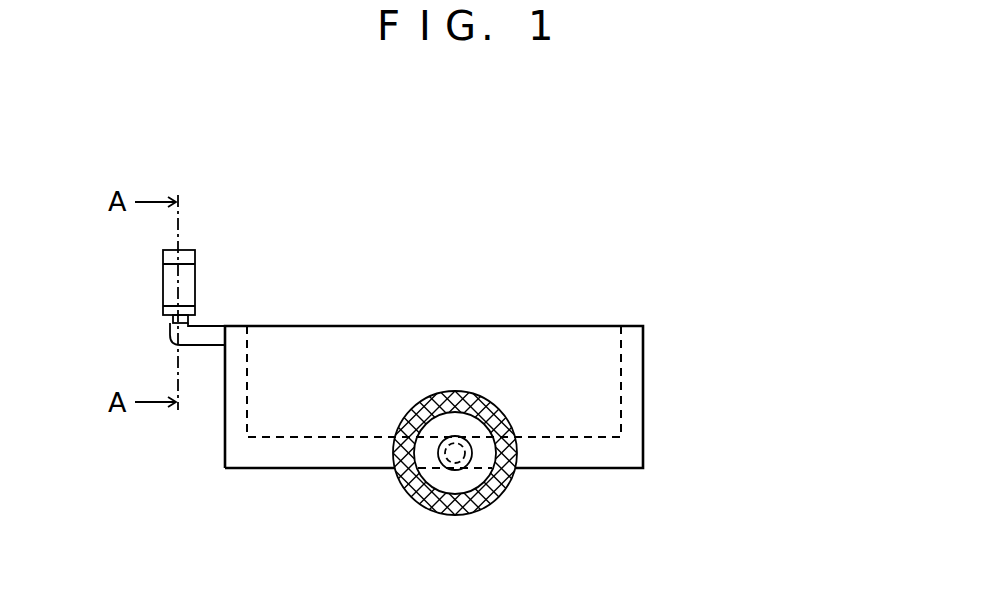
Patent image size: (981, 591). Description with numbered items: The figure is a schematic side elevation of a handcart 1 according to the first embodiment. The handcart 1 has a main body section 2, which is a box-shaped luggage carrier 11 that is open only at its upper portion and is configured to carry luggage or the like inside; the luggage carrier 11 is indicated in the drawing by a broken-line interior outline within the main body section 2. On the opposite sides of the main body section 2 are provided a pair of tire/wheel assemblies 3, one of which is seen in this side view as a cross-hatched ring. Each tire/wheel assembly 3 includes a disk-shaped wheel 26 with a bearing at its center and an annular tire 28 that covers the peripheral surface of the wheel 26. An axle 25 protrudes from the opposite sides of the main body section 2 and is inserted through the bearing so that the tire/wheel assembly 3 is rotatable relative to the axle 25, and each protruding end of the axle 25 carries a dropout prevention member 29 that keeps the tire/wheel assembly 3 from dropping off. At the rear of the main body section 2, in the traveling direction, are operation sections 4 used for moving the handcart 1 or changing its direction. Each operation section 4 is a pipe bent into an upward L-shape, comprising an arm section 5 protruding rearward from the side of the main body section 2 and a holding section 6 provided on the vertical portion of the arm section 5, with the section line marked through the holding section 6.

The handcart 1 is at (503, 199).
The main body section 2 is at (693, 314).
The tire/wheel assembly 3 is at (413, 531).
The operation section 4 is at (220, 267).
The arm section 5 is at (202, 335).
The holding section 6 is at (146, 293).
The luggage carrier 11 is at (567, 336).
The axle 25 is at (472, 465).
The wheel 26 is at (472, 485).
The tire 28 is at (468, 505).
The dropout prevention member 29 is at (439, 457).